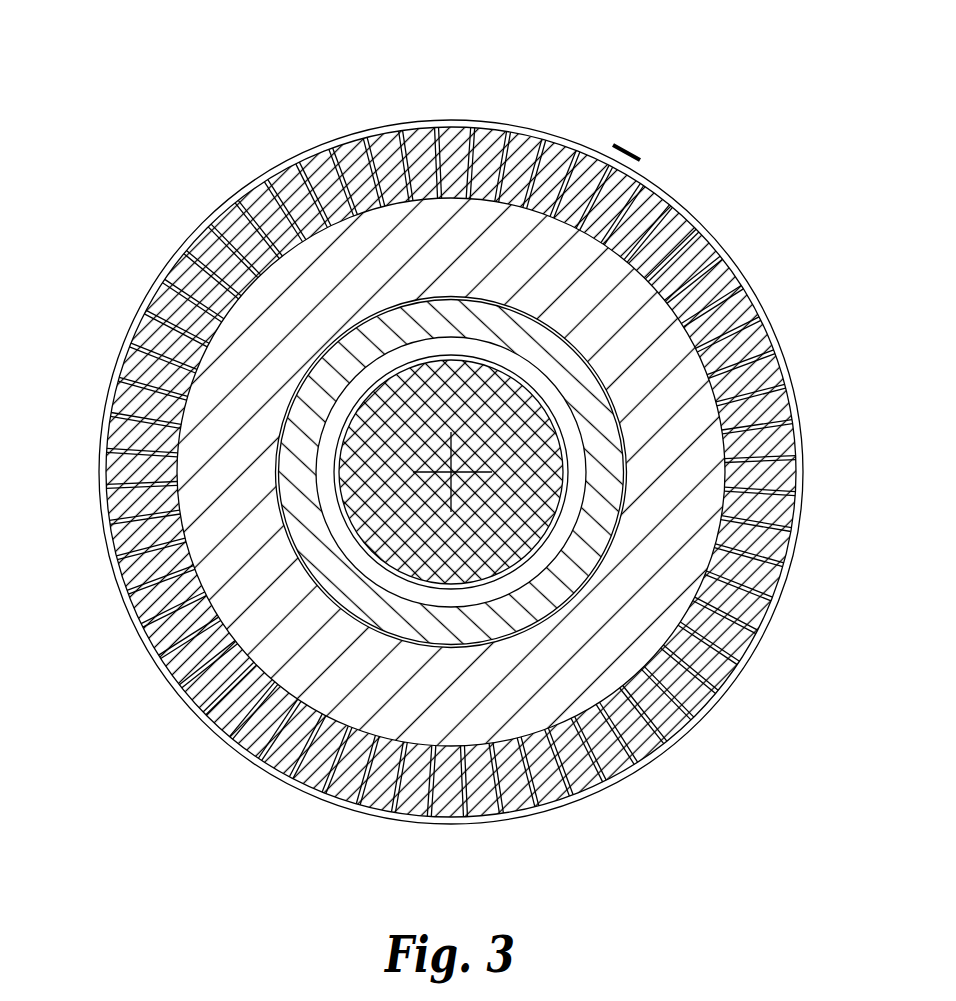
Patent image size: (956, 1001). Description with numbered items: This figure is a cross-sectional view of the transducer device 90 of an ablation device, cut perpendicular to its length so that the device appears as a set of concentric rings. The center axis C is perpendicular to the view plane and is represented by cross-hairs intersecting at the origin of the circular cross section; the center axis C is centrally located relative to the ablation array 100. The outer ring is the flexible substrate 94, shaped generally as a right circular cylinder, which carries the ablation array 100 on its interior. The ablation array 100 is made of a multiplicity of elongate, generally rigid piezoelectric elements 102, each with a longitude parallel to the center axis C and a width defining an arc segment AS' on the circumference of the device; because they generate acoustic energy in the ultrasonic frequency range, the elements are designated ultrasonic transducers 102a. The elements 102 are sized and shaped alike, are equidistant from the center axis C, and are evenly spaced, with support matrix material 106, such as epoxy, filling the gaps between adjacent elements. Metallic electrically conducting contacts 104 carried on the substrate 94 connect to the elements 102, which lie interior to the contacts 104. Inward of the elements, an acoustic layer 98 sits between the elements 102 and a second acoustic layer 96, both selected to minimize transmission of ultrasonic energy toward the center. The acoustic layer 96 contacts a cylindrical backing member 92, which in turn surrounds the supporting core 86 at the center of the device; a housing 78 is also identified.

The transducer device 90 is at (119, 135).
The housing 78 is at (800, 537).
The supporting core 86 is at (548, 561).
The cylindrical backing member 92 is at (440, 599).
The flexible substrate 94 is at (643, 767).
The acoustic layer 96 is at (510, 640).
The acoustic layer 98 is at (763, 337).
The ablation array 100 is at (134, 564).
The piezoelectric elements 102 is at (488, 137).
The ultrasonic transducers 102a is at (310, 173).
The electrically conducting contacts 104 is at (288, 768).
The support matrix material 106 is at (697, 700).
The center axis C is at (453, 472).
The arc segment AS is at (627, 148).